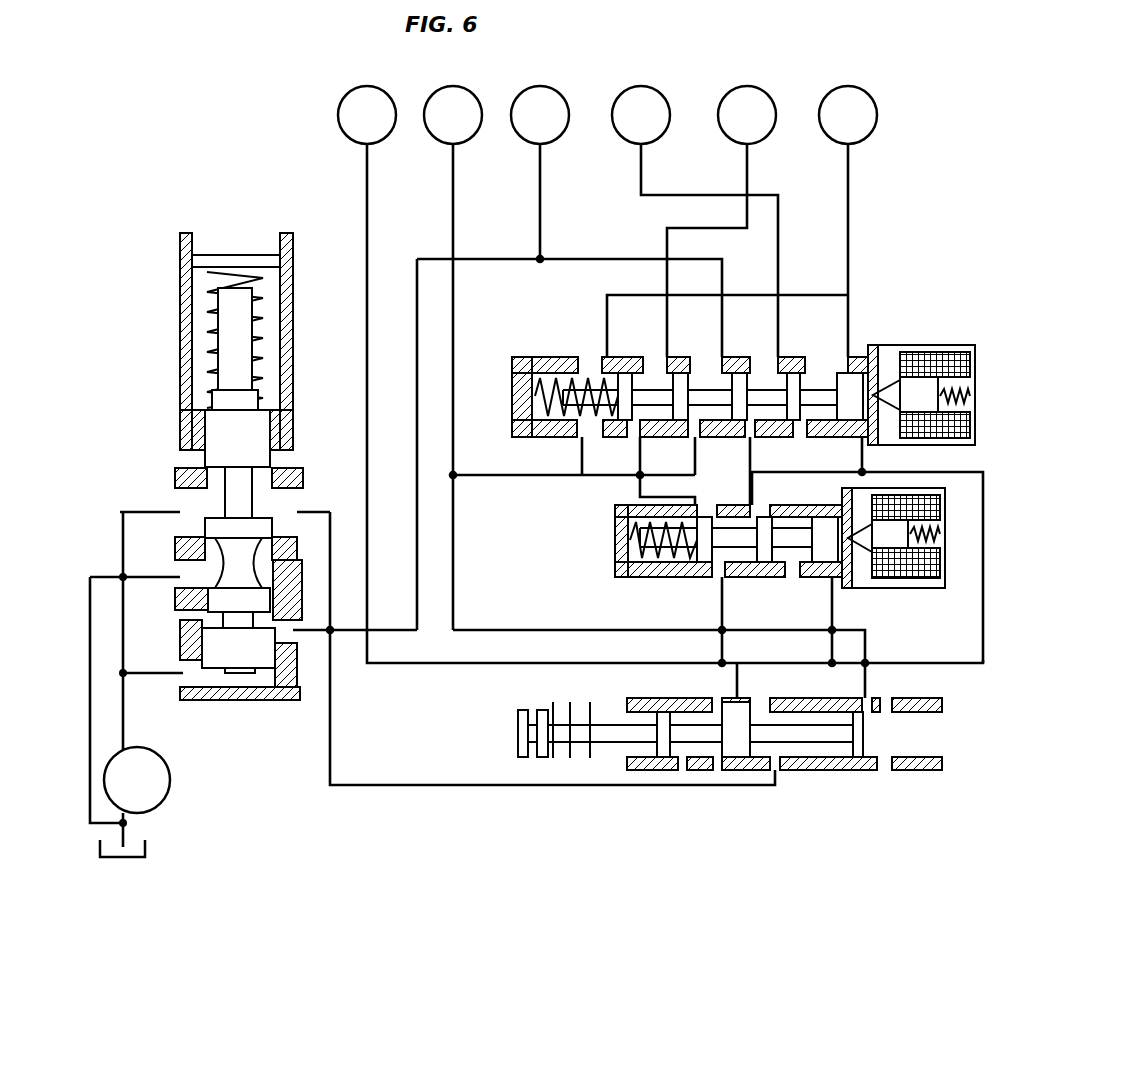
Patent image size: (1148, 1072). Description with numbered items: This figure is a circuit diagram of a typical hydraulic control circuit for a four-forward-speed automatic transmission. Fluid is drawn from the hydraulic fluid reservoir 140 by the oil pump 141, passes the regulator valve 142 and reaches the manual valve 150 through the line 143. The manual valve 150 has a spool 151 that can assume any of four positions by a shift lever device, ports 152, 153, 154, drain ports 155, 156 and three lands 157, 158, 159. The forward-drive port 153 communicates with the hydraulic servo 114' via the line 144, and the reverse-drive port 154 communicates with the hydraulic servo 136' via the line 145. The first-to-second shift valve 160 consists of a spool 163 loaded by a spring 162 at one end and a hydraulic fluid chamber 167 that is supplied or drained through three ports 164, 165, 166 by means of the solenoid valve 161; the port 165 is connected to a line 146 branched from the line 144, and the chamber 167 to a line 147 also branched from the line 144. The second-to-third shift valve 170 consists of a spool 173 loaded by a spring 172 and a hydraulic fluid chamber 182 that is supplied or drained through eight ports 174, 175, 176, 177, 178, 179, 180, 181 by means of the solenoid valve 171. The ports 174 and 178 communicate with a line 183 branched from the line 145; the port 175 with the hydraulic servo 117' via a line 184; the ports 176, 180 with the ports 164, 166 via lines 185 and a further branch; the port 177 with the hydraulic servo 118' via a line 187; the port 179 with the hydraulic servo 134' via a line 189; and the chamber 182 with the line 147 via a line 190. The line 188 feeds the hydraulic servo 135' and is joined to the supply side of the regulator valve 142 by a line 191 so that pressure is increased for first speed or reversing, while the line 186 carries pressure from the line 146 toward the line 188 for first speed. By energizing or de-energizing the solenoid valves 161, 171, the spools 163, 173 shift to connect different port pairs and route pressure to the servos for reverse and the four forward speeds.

The hydraulic servo 114' is at (378, 103).
The hydraulic servo 136' is at (464, 103).
The hydraulic servo 135' is at (551, 103).
The hydraulic servo 134' is at (653, 103).
The hydraulic servo 118' is at (760, 103).
The hydraulic servo 117' is at (865, 103).
The hydraulic fluid reservoir 140 is at (148, 848).
The oil pump 141 is at (170, 770).
The regulator valve 142 is at (228, 690).
The line 143 is at (395, 785).
The line 144 is at (510, 663).
The line 145 is at (510, 630).
The line 146 is at (722, 620).
The line 147 is at (832, 612).
The manual valve 150 is at (680, 770).
The spool 151 is at (518, 738).
The port 152 is at (776, 770).
The port 153 is at (740, 712).
The port 154 is at (870, 700).
The drain port 155 is at (716, 772).
The drain port 156 is at (885, 772).
The land 157 is at (664, 712).
The land 158 is at (730, 715).
The land 159 is at (856, 715).
The first-to-second shift valve 160 is at (692, 578).
The solenoid valve 161 is at (892, 590).
The spring 162 is at (636, 572).
The spool 163 is at (793, 555).
The port 164 is at (700, 512).
The port 165 is at (728, 577).
The port 166 is at (756, 512).
The hydraulic fluid chamber 167 is at (818, 520).
The second-to-third shift valve 170 is at (527, 402).
The solenoid valve 171 is at (905, 345).
The spring 172 is at (535, 375).
The spool 173 is at (800, 426).
The port 174 is at (577, 430).
The port 175 is at (596, 358).
The port 176 is at (633, 430).
The port 177 is at (658, 358).
The port 178 is at (692, 430).
The port 179 is at (712, 358).
The port 180 is at (748, 430).
The port 181 is at (766, 358).
The hydraulic fluid chamber 182 is at (838, 358).
The line 183 is at (495, 475).
The line 184 is at (848, 236).
The line 185 is at (630, 497).
The line 186 is at (862, 450).
The line 187 is at (706, 232).
The line 188 is at (578, 259).
The line 189 is at (778, 236).
The line 190 is at (983, 630).
The line 191 is at (417, 360).